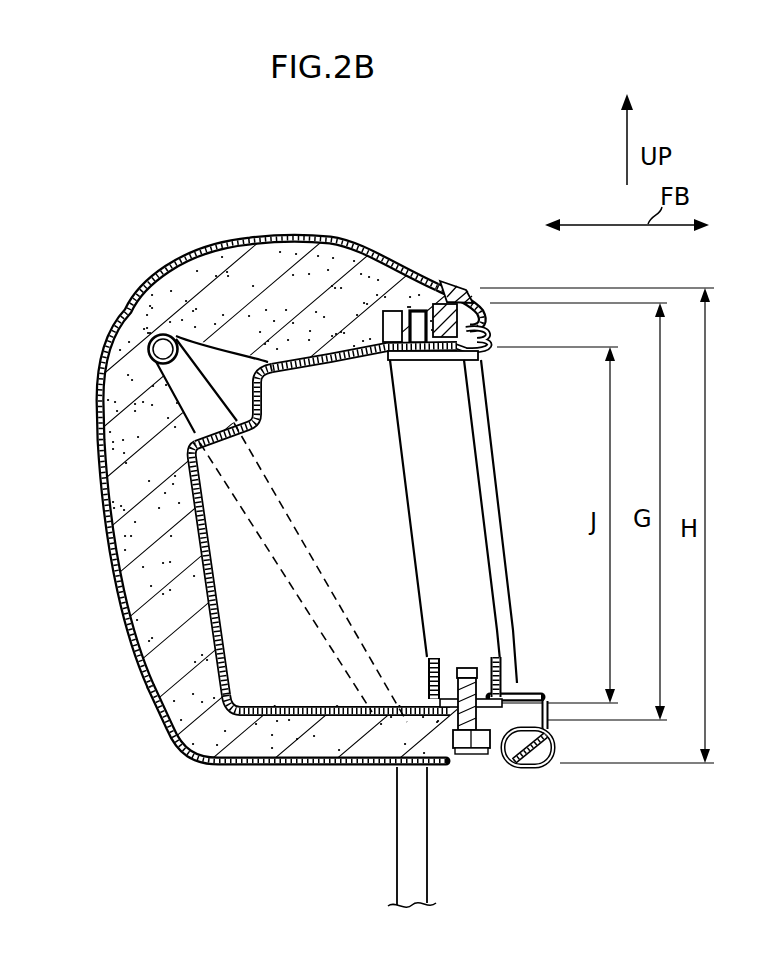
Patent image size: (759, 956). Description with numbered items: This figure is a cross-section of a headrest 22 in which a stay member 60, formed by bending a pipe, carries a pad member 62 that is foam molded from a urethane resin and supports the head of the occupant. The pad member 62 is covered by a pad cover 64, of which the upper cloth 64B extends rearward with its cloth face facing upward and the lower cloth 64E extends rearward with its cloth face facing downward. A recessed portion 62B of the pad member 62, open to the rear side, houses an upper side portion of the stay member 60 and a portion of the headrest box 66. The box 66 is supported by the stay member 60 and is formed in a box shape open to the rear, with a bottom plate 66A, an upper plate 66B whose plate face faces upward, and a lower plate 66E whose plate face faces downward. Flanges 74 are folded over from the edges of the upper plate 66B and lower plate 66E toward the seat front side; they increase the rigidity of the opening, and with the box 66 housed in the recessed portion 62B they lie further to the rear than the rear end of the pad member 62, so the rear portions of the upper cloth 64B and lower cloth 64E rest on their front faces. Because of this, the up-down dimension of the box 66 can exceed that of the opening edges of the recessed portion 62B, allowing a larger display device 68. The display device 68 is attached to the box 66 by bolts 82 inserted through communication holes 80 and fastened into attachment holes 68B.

The headrest 22 is at (437, 167).
The stay member 60 is at (393, 850).
The pad member 62 is at (270, 236).
The recessed portion 62B is at (232, 372).
The pad cover 64 is at (371, 240).
The upper cloth 64B is at (430, 272).
The lower cloth 64E is at (330, 767).
The headrest box 66 is at (332, 348).
The bottom plate 66A is at (203, 603).
The upper plate 66B is at (233, 372).
The lower plate 66E is at (278, 717).
The display device 68 is at (503, 521).
The attachment holes 68B is at (428, 655).
The flanges 74 is at (458, 282).
The communication holes 80 is at (479, 755).
The bolts 82 is at (468, 754).